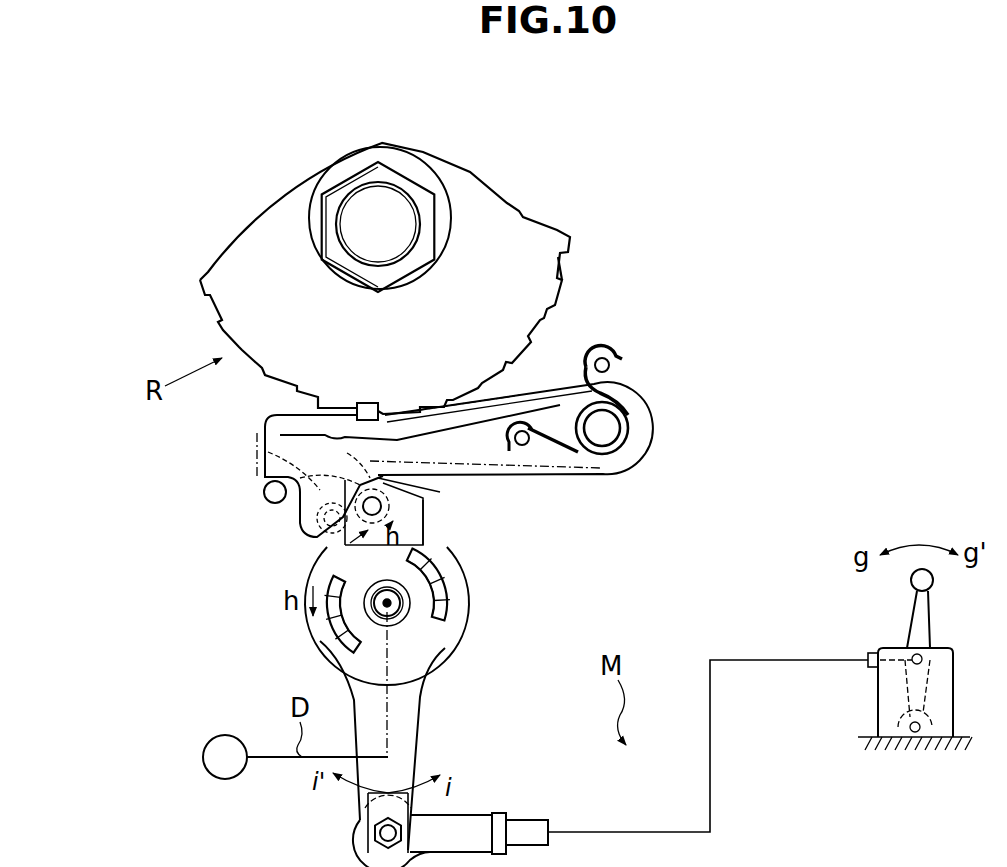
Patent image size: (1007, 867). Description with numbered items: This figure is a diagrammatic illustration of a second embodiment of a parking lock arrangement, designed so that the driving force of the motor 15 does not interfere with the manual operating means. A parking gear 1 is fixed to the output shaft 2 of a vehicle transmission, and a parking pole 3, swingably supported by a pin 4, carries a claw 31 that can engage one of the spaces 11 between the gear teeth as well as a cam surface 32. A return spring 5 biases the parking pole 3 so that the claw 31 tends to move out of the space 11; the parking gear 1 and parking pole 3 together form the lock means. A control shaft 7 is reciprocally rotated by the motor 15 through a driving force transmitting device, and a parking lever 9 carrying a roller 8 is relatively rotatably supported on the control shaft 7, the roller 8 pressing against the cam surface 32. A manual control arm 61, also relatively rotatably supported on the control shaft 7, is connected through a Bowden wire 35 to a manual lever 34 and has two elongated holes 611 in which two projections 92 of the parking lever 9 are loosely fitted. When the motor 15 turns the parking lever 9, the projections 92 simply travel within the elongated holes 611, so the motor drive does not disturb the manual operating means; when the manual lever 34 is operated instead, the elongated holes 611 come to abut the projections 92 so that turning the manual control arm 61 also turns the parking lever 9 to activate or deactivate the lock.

The parking gear 1 is at (527, 215).
The space 11 is at (540, 320).
The output shaft 2 is at (410, 207).
The parking pole 3 is at (512, 475).
The claw 31 is at (438, 490).
The cam surface 32 is at (372, 403).
The pin 4 is at (625, 420).
The return spring 5 is at (575, 455).
The control shaft 7 is at (397, 612).
The roller 8 is at (352, 458).
The parking lever 9 is at (455, 538).
The projection 92 is at (501, 588).
The manual control arm 61 is at (430, 700).
The elongated hole 611 is at (503, 630).
The motor 15 is at (225, 735).
The manual lever 34 is at (925, 618).
The Bowden wire 35 is at (712, 740).